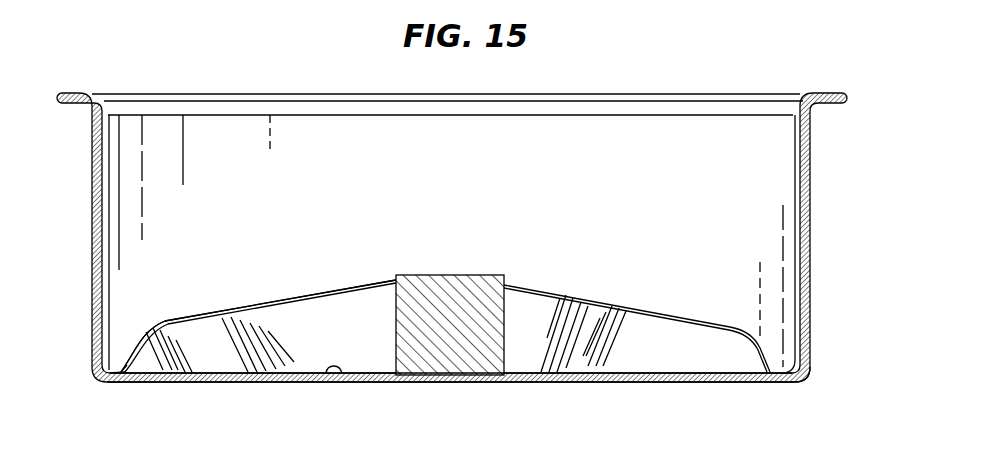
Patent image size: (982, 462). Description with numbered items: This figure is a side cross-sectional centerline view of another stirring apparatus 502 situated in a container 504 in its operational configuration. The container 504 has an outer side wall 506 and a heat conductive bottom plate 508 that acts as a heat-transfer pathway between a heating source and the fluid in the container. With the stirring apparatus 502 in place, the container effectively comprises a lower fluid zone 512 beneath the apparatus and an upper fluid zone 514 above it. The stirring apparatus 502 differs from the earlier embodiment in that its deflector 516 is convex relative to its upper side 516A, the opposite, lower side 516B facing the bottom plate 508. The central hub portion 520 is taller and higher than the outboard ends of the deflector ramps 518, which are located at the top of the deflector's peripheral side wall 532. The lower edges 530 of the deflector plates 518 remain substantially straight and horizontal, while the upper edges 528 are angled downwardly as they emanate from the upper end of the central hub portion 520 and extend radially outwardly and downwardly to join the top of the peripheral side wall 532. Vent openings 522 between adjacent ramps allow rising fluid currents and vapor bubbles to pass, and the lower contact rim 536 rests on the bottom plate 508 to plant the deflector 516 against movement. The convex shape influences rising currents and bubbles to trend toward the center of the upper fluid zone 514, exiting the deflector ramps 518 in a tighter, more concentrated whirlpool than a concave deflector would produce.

The stirring apparatus 502 is at (620, 340).
The container 504 is at (612, 106).
The outer side wall 506 is at (93, 278).
The heat conductive bottom plate 508 is at (334, 373).
The lower fluid zone 512 is at (173, 364).
The upper fluid zone 514 is at (168, 195).
The deflector 516 is at (798, 378).
The upper side of deflector 516A is at (529, 360).
The lower side of deflector 516B is at (378, 360).
The deflector ramps 518 is at (296, 318).
The central hub portion 520 is at (450, 275).
The vent openings 522 is at (250, 358).
The upper edges of deflector plates 528 is at (194, 318).
The lower edges of deflector plates 530 is at (193, 376).
The peripheral side wall 532 is at (130, 355).
The lower contact rim 536 is at (120, 367).